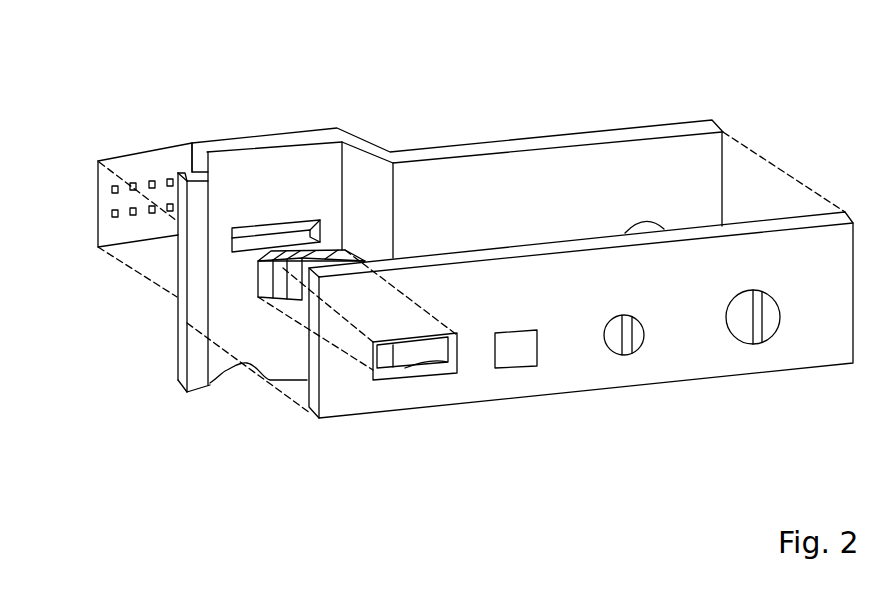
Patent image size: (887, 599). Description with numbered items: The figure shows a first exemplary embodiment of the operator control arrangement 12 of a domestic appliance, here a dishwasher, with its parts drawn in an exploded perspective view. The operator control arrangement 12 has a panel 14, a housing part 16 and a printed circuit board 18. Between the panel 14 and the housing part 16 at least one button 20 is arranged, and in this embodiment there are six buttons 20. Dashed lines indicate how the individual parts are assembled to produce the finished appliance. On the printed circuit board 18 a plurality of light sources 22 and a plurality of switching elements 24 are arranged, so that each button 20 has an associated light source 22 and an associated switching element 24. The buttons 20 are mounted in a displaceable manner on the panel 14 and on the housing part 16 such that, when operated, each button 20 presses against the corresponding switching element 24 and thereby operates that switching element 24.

The operator control arrangement 12 is at (736, 68).
The panel 14 is at (672, 362).
The housing part 16 is at (535, 143).
The printed circuit board 18 is at (150, 157).
The button 20 is at (273, 282).
The light source 22 is at (112, 187).
The switching element 24 is at (112, 213).